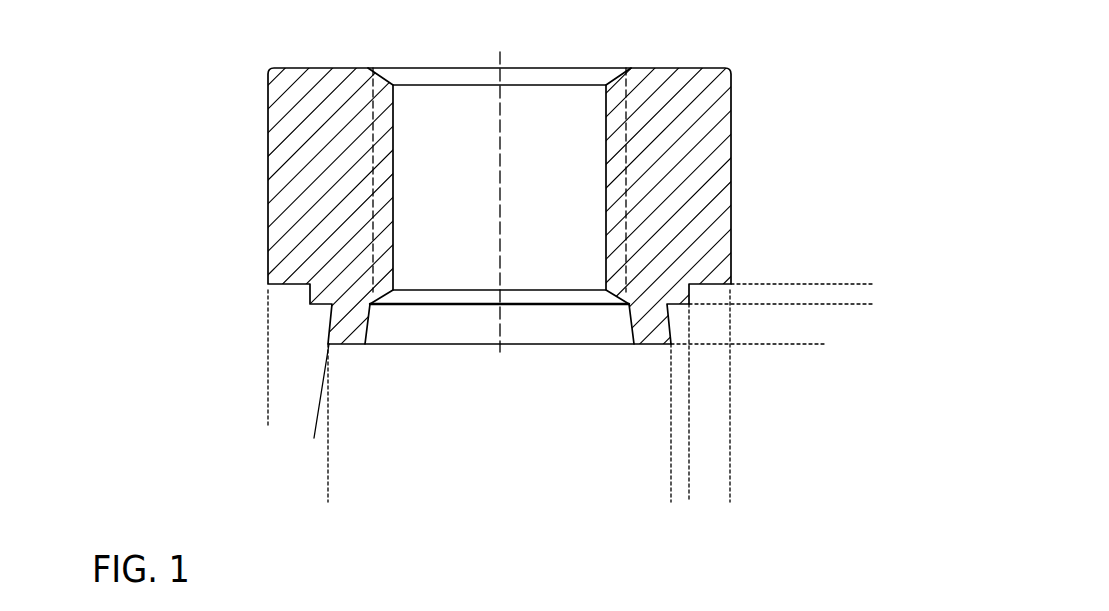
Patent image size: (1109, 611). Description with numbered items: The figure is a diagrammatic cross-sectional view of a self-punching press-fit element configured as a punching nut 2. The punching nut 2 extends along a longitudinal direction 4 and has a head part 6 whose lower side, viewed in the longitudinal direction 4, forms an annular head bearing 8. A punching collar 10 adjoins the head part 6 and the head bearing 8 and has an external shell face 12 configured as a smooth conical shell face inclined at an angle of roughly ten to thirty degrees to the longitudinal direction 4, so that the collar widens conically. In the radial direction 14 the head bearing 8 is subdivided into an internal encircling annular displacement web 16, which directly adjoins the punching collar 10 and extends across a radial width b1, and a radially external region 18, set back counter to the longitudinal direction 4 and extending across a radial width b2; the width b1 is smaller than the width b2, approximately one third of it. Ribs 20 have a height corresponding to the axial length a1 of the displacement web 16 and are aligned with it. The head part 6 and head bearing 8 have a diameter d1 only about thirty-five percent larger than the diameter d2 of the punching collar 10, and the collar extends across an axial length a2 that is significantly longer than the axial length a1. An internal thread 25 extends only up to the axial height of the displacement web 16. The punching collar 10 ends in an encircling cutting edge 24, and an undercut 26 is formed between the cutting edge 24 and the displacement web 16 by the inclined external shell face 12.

The punching nut 2 is at (795, 82).
The longitudinal direction 4 is at (119, 110).
The head part 6 is at (288, 127).
The head bearing 8 is at (326, 316).
The punching collar 10 is at (332, 350).
The external shell face 12 is at (327, 345).
The radial direction 14 is at (952, 180).
The displacement web 16 is at (665, 298).
The external region 18 is at (710, 291).
The ribs 20 is at (278, 305).
The cutting edge 24 is at (672, 345).
The internal thread 25 is at (603, 190).
The undercut 26 is at (326, 340).
The axial length of the displacement web a1 is at (868, 238).
The axial length of the punching collar a2 is at (820, 305).
The radial width of the displacement web b1 is at (625, 453).
The radial width of the external region b2 is at (672, 497).
The diameter of the head part d1 is at (670, 497).
The diameter of the punching collar d2 is at (269, 420).